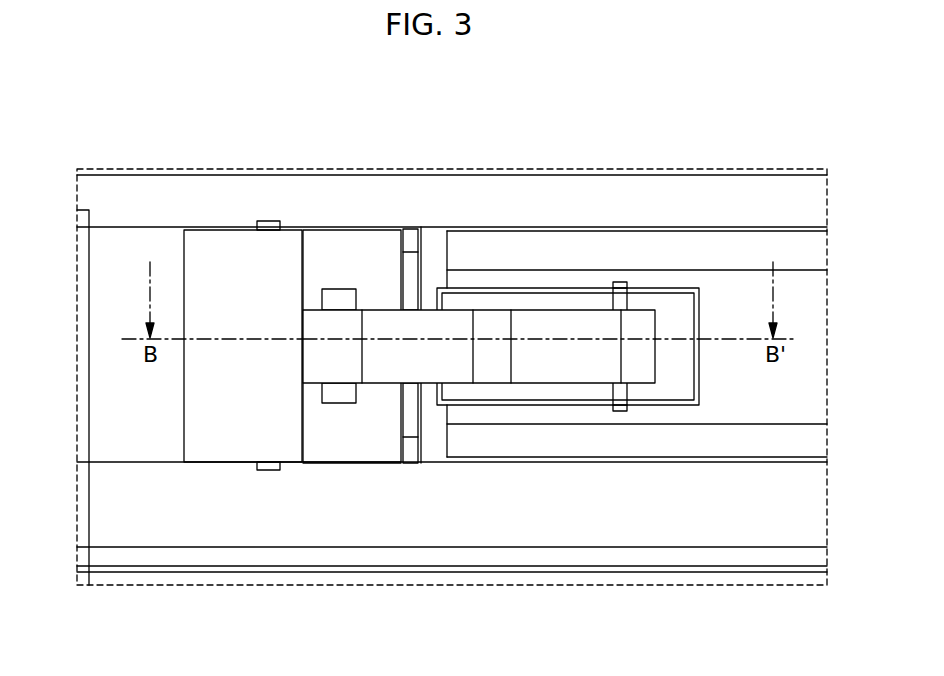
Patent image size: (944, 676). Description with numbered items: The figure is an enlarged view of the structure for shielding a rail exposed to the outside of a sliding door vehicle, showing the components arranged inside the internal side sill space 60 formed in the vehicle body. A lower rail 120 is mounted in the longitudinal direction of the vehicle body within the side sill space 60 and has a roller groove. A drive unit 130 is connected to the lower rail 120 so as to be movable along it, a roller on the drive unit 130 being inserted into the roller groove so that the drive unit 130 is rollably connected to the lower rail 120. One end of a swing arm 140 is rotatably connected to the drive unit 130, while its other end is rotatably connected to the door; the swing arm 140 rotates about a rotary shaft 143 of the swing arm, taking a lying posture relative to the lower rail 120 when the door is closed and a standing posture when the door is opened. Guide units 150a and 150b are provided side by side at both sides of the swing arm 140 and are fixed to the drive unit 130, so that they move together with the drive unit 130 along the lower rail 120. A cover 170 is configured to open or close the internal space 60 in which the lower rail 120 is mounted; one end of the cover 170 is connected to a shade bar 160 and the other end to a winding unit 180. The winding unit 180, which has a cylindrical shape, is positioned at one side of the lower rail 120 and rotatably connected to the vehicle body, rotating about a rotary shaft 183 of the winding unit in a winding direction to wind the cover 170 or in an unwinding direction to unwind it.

The internal side sill space 60 is at (156, 413).
The lower rail 120 is at (806, 363).
The drive unit 130 is at (675, 385).
The swing arm 140 is at (459, 327).
The rotary shaft of the swing arm 143 is at (620, 282).
The guide unit 150a is at (410, 457).
The guide unit 150b is at (412, 235).
The shade bar 160 is at (405, 410).
The cover 170 is at (350, 243).
The winding unit 180 is at (203, 377).
The rotary shaft of the winding unit 183 is at (270, 221).